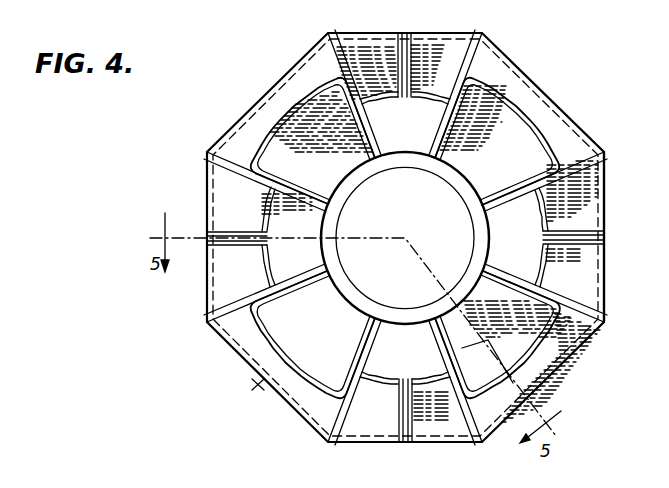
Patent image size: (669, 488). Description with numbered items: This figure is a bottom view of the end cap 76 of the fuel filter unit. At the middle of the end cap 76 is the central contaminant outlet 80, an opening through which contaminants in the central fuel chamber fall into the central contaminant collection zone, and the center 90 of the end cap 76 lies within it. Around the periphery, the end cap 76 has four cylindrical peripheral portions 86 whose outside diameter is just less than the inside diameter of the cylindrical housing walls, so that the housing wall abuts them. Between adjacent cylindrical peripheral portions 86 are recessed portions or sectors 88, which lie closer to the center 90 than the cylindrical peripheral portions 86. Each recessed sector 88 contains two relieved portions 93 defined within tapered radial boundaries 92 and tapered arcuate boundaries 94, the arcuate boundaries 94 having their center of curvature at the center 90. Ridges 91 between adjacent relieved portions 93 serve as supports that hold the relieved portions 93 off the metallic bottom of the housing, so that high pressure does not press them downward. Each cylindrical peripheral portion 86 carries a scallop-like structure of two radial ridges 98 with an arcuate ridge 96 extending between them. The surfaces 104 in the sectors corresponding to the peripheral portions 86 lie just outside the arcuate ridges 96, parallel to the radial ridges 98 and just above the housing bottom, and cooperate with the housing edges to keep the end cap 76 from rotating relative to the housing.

The end cap 76 is at (188, 130).
The central contaminant outlet 80 is at (348, 271).
The cylindrical peripheral portions 86 is at (551, 76).
The recessed portions or sectors 88 is at (606, 263).
The center 90 is at (405, 238).
The ridges 91 is at (408, 443).
The tapered radial boundaries 92 is at (587, 214).
The relieved portions 93 is at (590, 210).
The tapered arcuate boundaries 94 is at (540, 250).
The arcuate ridge 96 is at (277, 340).
The radial ridges 98 is at (521, 292).
The radial edges (surfaces) 104 is at (256, 384).